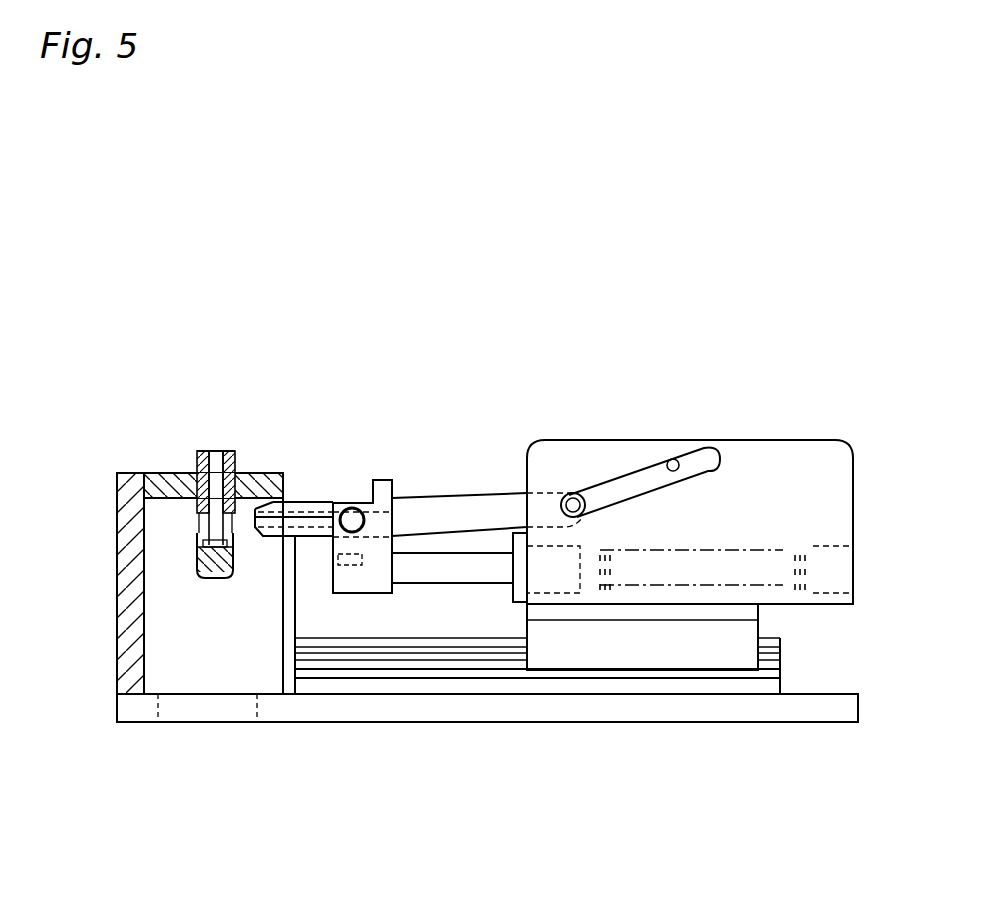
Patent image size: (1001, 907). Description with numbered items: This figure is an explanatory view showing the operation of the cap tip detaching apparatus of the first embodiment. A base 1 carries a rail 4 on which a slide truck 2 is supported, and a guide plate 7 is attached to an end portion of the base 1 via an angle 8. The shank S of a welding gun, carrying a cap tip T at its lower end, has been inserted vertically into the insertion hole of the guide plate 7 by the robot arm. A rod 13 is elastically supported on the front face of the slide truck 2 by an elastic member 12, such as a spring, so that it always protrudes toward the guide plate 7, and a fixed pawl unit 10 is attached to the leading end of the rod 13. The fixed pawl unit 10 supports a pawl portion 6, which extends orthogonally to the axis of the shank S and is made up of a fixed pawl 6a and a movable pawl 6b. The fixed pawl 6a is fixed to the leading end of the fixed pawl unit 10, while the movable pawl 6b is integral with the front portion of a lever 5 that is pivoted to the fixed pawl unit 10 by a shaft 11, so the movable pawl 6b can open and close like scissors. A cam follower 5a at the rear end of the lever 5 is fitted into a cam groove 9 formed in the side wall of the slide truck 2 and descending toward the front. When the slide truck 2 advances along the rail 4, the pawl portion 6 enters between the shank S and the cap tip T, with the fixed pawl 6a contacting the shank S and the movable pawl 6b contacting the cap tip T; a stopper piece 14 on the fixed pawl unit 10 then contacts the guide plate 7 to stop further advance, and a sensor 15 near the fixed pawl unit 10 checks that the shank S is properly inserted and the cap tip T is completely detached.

The base 1 is at (858, 708).
The slide truck 2 is at (792, 440).
The rail 4 is at (780, 663).
The lever 5 is at (471, 495).
The cam follower 5a is at (576, 493).
The pawl portion 6 is at (277, 551).
The fixed pawl 6a is at (303, 498).
The movable pawl 6b is at (301, 540).
The guide plate 7 is at (172, 473).
The angle 8 is at (117, 577).
The cam groove 9 is at (675, 467).
The fixed pawl unit 10 is at (375, 593).
The shaft 11 is at (354, 508).
The elastic member 12 is at (765, 548).
The rod 13 is at (452, 583).
The stopper piece 14 is at (394, 487).
The sensor 15 is at (350, 568).
The shank S is at (219, 451).
The cap tip T is at (197, 572).